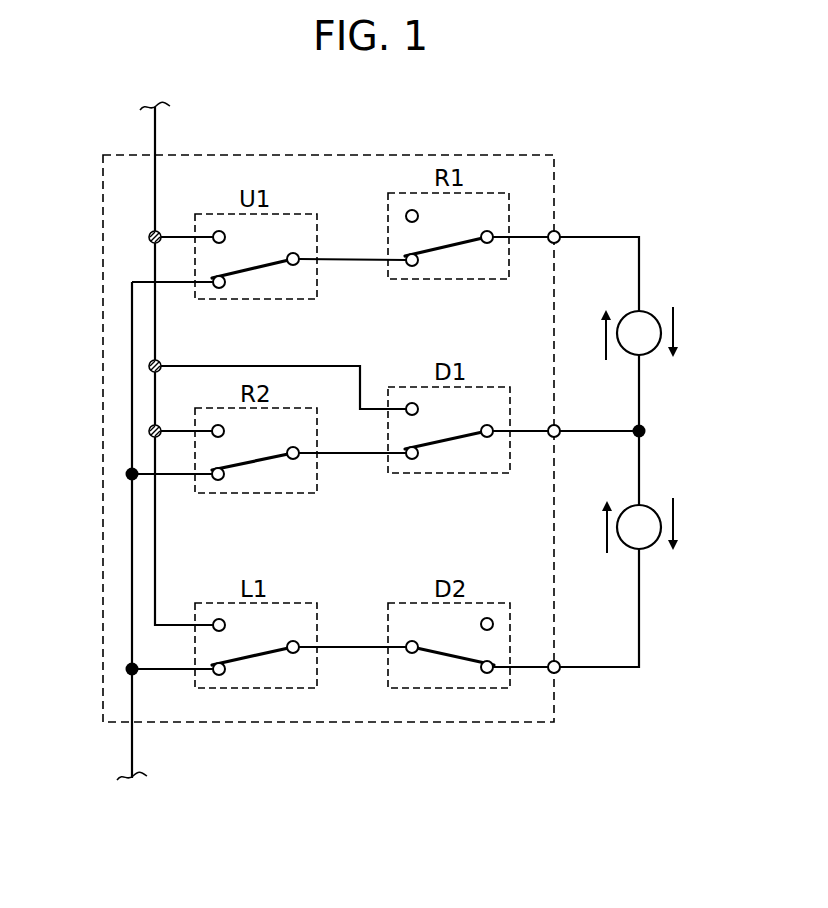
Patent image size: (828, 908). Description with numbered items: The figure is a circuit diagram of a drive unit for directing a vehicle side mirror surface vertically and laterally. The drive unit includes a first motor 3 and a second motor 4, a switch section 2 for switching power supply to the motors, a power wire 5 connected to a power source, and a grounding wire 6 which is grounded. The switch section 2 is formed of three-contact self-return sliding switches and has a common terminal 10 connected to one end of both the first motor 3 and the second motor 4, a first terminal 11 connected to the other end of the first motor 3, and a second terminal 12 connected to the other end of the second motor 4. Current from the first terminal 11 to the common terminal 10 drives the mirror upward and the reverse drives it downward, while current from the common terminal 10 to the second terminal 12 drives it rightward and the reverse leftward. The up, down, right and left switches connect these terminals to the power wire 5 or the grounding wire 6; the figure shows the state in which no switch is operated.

The switch section 2 is at (489, 722).
The first motor 3 is at (645, 314).
The second motor 4 is at (645, 508).
The power wire 5 is at (155, 129).
The grounding wire 6 is at (132, 749).
The common terminal 10 is at (549, 425).
The first terminal 11 is at (558, 232).
The second terminal 12 is at (558, 672).